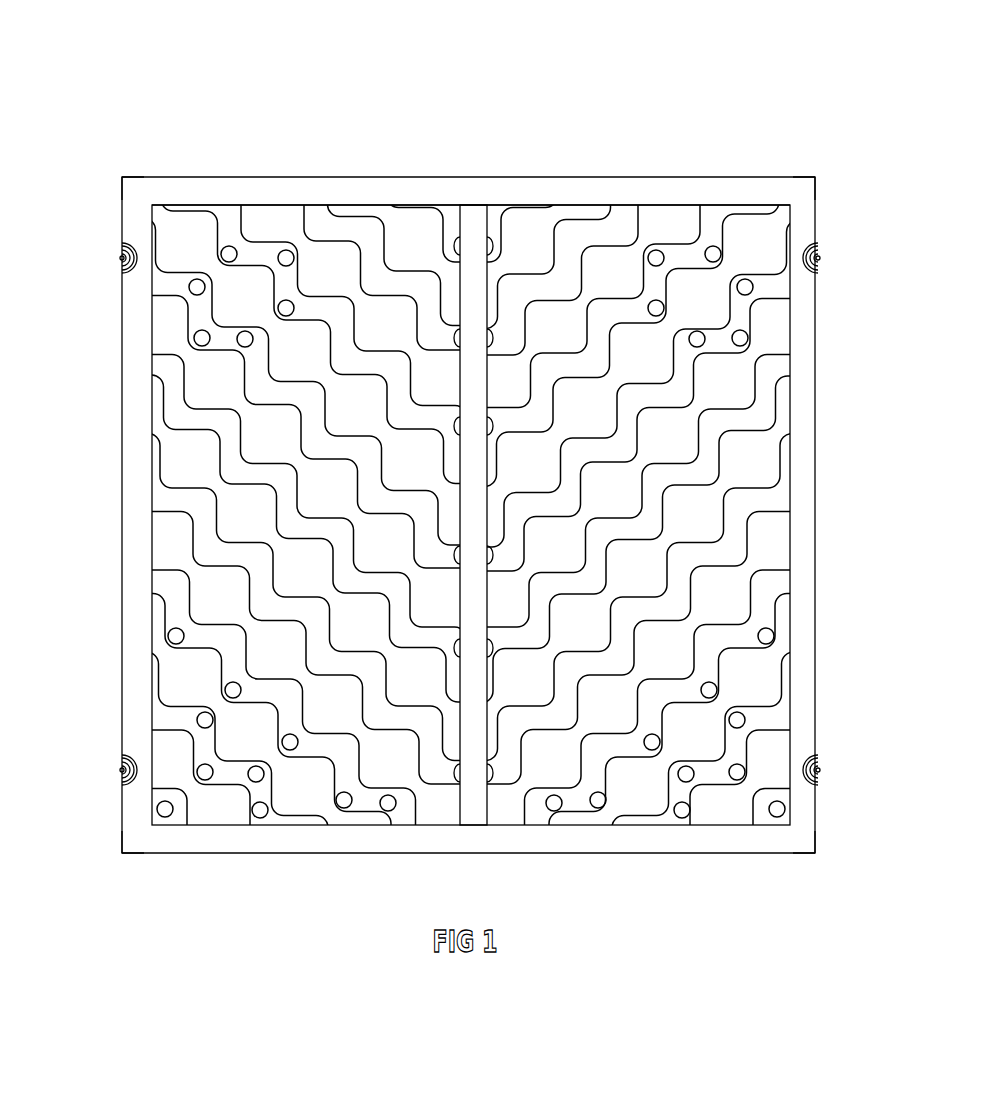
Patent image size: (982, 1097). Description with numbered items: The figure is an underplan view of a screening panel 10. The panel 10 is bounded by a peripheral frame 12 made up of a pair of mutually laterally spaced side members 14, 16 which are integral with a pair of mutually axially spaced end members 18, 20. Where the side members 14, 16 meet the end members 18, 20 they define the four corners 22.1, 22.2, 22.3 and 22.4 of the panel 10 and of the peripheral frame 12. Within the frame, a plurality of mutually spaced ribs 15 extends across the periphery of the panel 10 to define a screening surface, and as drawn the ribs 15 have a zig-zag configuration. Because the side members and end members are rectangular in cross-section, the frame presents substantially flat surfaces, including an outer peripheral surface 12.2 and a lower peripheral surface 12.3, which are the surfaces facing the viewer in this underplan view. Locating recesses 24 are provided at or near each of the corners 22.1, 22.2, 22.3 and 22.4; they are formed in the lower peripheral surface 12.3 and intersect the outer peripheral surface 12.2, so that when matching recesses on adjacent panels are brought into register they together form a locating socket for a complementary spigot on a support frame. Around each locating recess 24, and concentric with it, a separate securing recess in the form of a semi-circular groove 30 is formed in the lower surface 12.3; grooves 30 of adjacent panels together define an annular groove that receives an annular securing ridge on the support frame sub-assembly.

The screening panel 10 is at (537, 86).
The peripheral frame 12 is at (669, 173).
The outer peripheral surface 12.2 is at (541, 173).
The lower peripheral surface 12.3 is at (591, 201).
The side member 14 is at (121, 489).
The side member 16 is at (816, 489).
The end member 18 is at (431, 176).
The end member 20 is at (431, 854).
The corner 22.1 is at (121, 173).
The corner 22.2 is at (820, 171).
The corner 22.3 is at (120, 858).
The corner 22.4 is at (818, 858).
The ribs 15 is at (358, 230).
The locating recesses 24 is at (120, 258).
The semi-circular grooves 30 is at (120, 244).